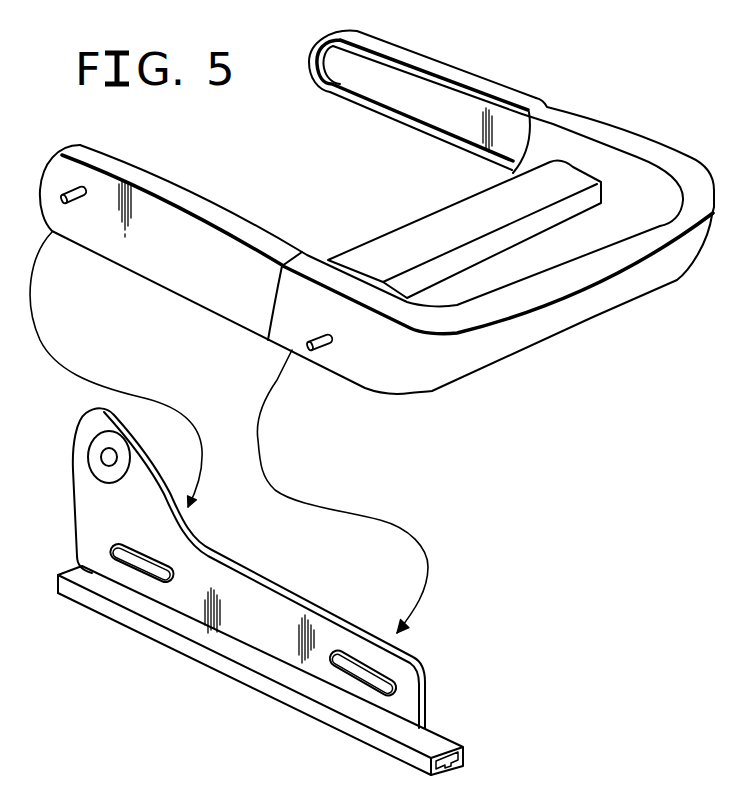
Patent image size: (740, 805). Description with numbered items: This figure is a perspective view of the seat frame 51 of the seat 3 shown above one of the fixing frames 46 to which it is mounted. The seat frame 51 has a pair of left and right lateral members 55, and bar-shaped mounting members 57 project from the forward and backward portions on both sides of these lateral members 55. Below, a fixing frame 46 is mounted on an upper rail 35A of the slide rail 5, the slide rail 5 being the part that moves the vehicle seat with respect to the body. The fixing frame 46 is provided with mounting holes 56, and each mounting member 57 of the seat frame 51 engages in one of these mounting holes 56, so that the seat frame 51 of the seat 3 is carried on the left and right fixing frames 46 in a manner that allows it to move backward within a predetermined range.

The seat 3 is at (193, 303).
The slide rail 5 is at (238, 683).
The upper rail 35A is at (195, 647).
The fixing frame 46 is at (292, 592).
The seat frame 51 is at (238, 325).
The lateral member 55 is at (462, 80).
The mounting hole 56 is at (140, 560).
The mounting member 57 is at (80, 200).